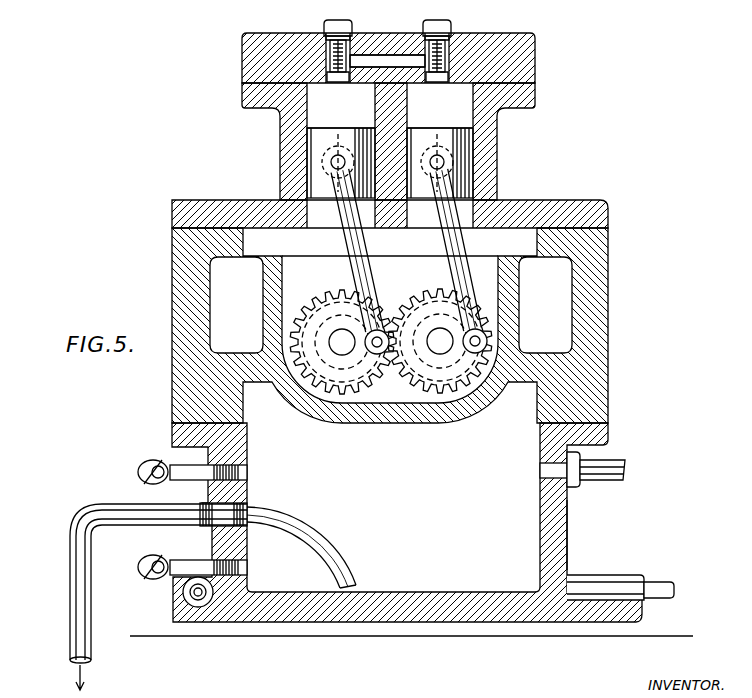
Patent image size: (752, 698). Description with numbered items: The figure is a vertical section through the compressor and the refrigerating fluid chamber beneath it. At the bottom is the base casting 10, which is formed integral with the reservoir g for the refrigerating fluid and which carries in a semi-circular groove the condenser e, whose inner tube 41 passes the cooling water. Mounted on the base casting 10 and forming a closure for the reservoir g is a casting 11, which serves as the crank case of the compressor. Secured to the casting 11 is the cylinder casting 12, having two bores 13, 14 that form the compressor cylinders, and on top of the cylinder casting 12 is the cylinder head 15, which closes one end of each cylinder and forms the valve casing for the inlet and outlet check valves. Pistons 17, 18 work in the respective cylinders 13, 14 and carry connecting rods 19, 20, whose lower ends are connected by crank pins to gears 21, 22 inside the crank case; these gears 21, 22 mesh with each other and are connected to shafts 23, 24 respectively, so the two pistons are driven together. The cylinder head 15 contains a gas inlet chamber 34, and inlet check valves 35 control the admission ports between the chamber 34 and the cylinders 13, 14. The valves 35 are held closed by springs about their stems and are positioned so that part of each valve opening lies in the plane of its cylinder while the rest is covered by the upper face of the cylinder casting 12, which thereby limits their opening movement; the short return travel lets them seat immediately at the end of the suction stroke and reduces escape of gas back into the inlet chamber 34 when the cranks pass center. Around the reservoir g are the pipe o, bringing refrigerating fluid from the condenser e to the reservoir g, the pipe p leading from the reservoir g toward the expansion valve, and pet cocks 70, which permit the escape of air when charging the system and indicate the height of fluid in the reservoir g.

The base casting 10 is at (365, 613).
The casting 11 is at (608, 323).
The cylinder casting 12 is at (498, 189).
The bore 13 is at (456, 118).
The bore 14 is at (320, 117).
The cylinder head 15 is at (535, 44).
The piston 17 is at (478, 157).
The piston 18 is at (312, 152).
The connecting rod 19 is at (456, 265).
The connecting rod 20 is at (362, 268).
The gear 21 is at (439, 336).
The gear 22 is at (342, 335).
The shaft 23 is at (440, 335).
The shaft 24 is at (342, 336).
The gas inlet chamber 34 is at (381, 57).
The inlet check valve 35 is at (390, 108).
The inner tube 41 is at (202, 608).
The pet cock 70 is at (145, 466).
The pipe p is at (68, 608).
The condenser e is at (180, 596).
The pipe o is at (660, 486).
The reservoir g is at (562, 532).